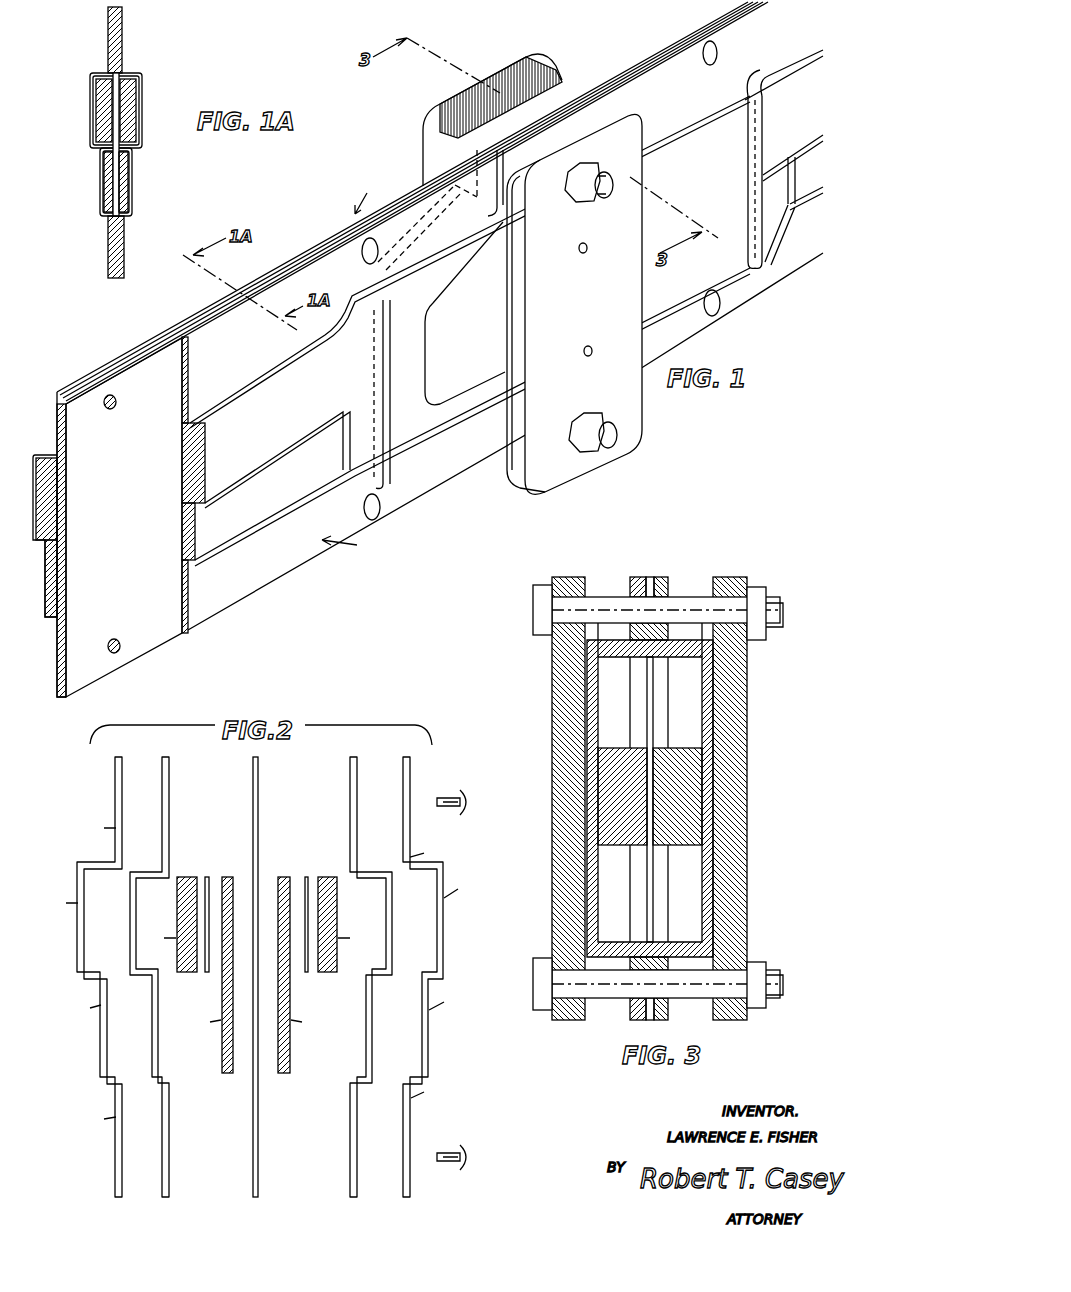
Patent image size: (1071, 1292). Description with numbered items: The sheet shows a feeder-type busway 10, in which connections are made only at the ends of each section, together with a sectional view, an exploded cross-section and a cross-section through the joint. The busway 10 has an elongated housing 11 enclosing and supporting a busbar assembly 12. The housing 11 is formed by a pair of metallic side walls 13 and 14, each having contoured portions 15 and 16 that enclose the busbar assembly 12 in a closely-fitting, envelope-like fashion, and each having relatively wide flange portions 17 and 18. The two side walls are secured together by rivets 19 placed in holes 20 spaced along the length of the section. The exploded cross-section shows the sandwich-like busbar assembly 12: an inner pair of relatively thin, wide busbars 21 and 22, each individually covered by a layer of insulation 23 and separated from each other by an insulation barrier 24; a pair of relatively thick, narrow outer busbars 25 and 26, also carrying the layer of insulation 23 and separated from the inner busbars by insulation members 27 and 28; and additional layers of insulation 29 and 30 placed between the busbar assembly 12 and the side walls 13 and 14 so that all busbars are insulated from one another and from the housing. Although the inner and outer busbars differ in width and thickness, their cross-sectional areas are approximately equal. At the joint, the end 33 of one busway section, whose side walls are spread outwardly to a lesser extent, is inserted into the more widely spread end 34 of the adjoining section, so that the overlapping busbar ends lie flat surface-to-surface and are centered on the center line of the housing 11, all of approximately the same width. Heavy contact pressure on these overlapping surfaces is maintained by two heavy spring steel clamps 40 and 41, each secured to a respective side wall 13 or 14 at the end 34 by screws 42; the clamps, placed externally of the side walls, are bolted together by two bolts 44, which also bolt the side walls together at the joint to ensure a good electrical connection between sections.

In FIG. 1, the busway 10 is at (370, 194).
In FIG. 1, the housing 11 is at (353, 545).
In FIG. 1, the busbar assembly 12 is at (38, 577).
In FIG. 1, the side wall 13 is at (50, 395).
In FIG. 2, the side wall 13 is at (113, 765).
In FIG. 1, the side wall 14 is at (200, 336).
In FIG. 2, the side wall 14 is at (411, 828).
In FIG. 1A, the contoured portion 15 is at (143, 92).
In FIG. 1, the contoured portion 15 is at (248, 451).
In FIG. 2, the contoured portion 15 is at (262, 895).
In FIG. 1A, the contoured portion 16 is at (133, 176).
In FIG. 1, the contoured portion 16 is at (316, 471).
In FIG. 2, the contoured portion 16 is at (268, 1004).
In FIG. 1A, the flange portion 17 is at (125, 245).
In FIG. 1, the flange portion 17 is at (222, 598).
In FIG. 2, the flange portion 17 is at (264, 1104).
In FIG. 1A, the flange portion 18 is at (123, 30).
In FIG. 1, the flange portion 18 is at (246, 361).
In FIG. 2, the flange portion 18 is at (264, 840).
In FIG. 1, the rivet 19 is at (377, 244).
In FIG. 2, the rivet 19 is at (455, 795).
In FIG. 1, the hole 20 is at (115, 397).
In FIG. 1A, the inner busbar 21 is at (103, 186).
In FIG. 1, the inner busbar 21 is at (50, 610).
In FIG. 2, the inner busbar 21 is at (228, 877).
In FIG. 1A, the inner busbar 22 is at (119, 185).
In FIG. 2, the inner busbar 22 is at (284, 877).
In FIG. 2, the layer of insulation 23 is at (258, 981).
In FIG. 1, the insulation barrier 24 is at (124, 483).
In FIG. 2, the insulation barrier 24 is at (259, 808).
In FIG. 1A, the outer busbar 25 is at (95, 120).
In FIG. 1, the outer busbar 25 is at (42, 540).
In FIG. 2, the outer busbar 25 is at (176, 907).
In FIG. 1A, the outer busbar 26 is at (138, 124).
In FIG. 2, the outer busbar 26 is at (338, 905).
In FIG. 2, the insulation member 27 is at (207, 877).
In FIG. 2, the insulation member 28 is at (307, 877).
In FIG. 2, the layer of insulation 29 is at (170, 770).
In FIG. 2, the layer of insulation 30 is at (358, 783).
In FIG. 1, the busway section end 33 is at (421, 355).
In FIG. 1, the busway section end 34 is at (731, 166).
In FIG. 1, the spring steel clamp 40 is at (524, 73).
In FIG. 3, the spring steel clamp 40 is at (551, 660).
In FIG. 1, the spring steel clamp 41 is at (644, 300).
In FIG. 3, the spring steel clamp 41 is at (748, 665).
In FIG. 1, the screw 42 is at (579, 249).
In FIG. 1, the bolt 44 is at (600, 196).
In FIG. 3, the bolt 44 is at (533, 622).